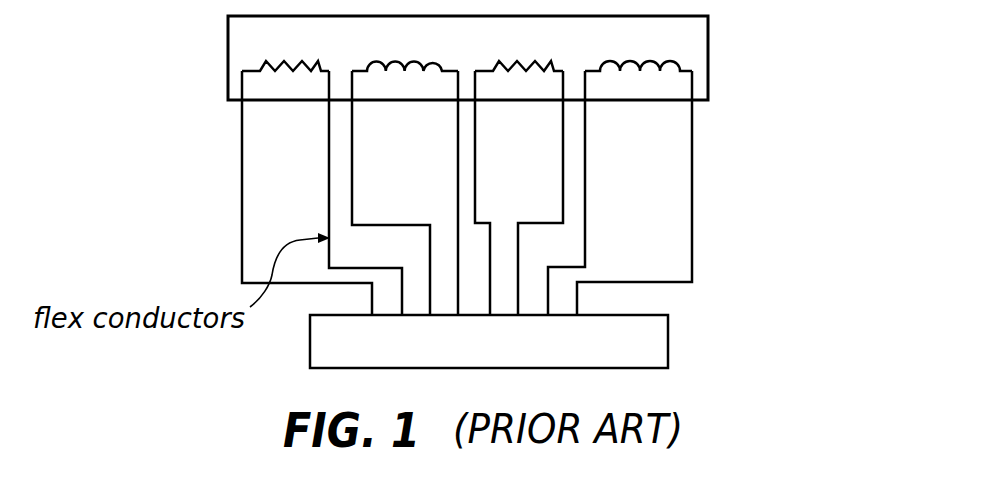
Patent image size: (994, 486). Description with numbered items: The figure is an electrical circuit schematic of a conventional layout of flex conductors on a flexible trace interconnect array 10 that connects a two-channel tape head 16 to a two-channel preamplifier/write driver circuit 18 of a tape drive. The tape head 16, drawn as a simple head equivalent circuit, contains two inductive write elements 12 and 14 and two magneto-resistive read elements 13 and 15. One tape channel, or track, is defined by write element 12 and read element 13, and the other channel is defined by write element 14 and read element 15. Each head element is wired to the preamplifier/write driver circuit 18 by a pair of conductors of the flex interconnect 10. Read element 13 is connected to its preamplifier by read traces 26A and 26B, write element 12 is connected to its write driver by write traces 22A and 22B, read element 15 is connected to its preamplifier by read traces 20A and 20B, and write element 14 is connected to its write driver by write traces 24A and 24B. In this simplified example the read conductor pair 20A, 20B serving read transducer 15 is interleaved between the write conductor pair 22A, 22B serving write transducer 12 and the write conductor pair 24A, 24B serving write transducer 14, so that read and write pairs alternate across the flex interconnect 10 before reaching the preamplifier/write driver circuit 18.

The flexible trace interconnect array 10 is at (226, 243).
The inductive write element 12 is at (395, 75).
The magneto-resistive read element 13 is at (302, 77).
The inductive write element 14 is at (631, 77).
The magneto-resistive read element 15 is at (537, 77).
The two-channel tape head 16 is at (228, 53).
The two-channel preamplifier/write driver circuit 18 is at (310, 335).
The read trace 20A is at (475, 167).
The read trace 20B is at (563, 182).
The write trace 22A is at (352, 173).
The write trace 22B is at (458, 183).
The write trace 24A is at (585, 177).
The write trace 24B is at (692, 192).
The read trace 26A is at (242, 190).
The read trace 26B is at (329, 204).